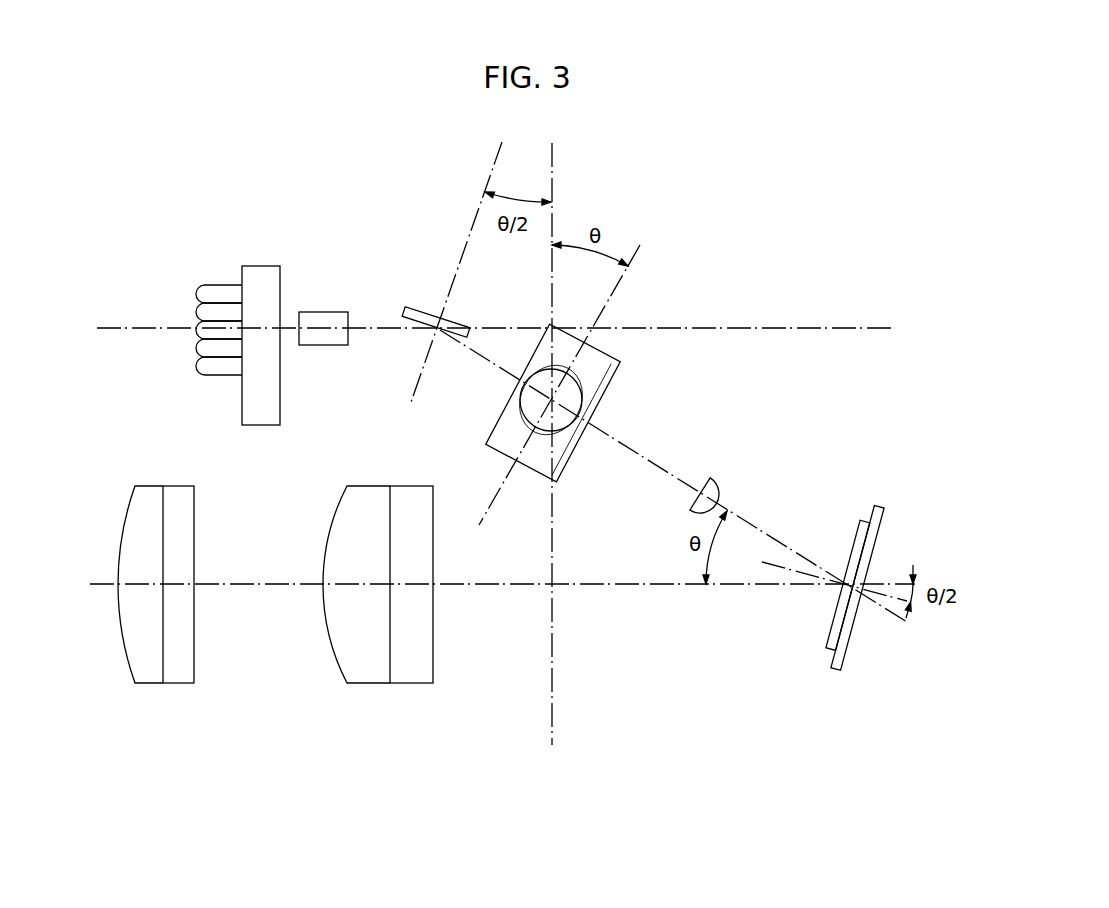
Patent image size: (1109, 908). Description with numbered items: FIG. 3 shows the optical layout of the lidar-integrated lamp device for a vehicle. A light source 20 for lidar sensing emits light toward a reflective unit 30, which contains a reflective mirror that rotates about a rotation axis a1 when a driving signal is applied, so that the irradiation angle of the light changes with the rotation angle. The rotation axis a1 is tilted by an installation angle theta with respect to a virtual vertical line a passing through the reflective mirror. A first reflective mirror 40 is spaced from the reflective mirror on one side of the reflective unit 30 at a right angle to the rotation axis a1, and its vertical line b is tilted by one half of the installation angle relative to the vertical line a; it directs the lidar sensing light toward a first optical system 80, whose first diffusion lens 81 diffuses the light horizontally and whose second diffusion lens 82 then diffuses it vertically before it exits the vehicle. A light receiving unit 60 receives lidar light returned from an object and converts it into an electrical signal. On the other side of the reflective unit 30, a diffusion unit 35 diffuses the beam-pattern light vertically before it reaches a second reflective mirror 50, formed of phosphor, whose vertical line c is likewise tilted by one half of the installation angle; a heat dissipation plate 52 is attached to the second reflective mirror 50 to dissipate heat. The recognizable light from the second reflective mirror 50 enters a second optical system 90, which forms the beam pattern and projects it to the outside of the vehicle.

The light source for lidar sensing 20 is at (582, 400).
The reflective unit 30 is at (635, 366).
The diffusion unit 35 is at (714, 489).
The first reflective mirror 40 is at (410, 305).
The second reflective mirror 50 is at (840, 633).
The heat dissipation plate 52 is at (845, 672).
The light receiving unit 60 is at (253, 405).
The first optical system 80 is at (297, 184).
The first diffusion lens 81 is at (320, 318).
The second diffusion lens 82 is at (216, 293).
The second optical system 90 is at (148, 675).
The virtual vertical line a is at (553, 162).
The vertical line of the first reflective mirror b is at (497, 153).
The rotation axis a1 is at (616, 288).
The vertical line of the second reflective mirror c is at (768, 570).